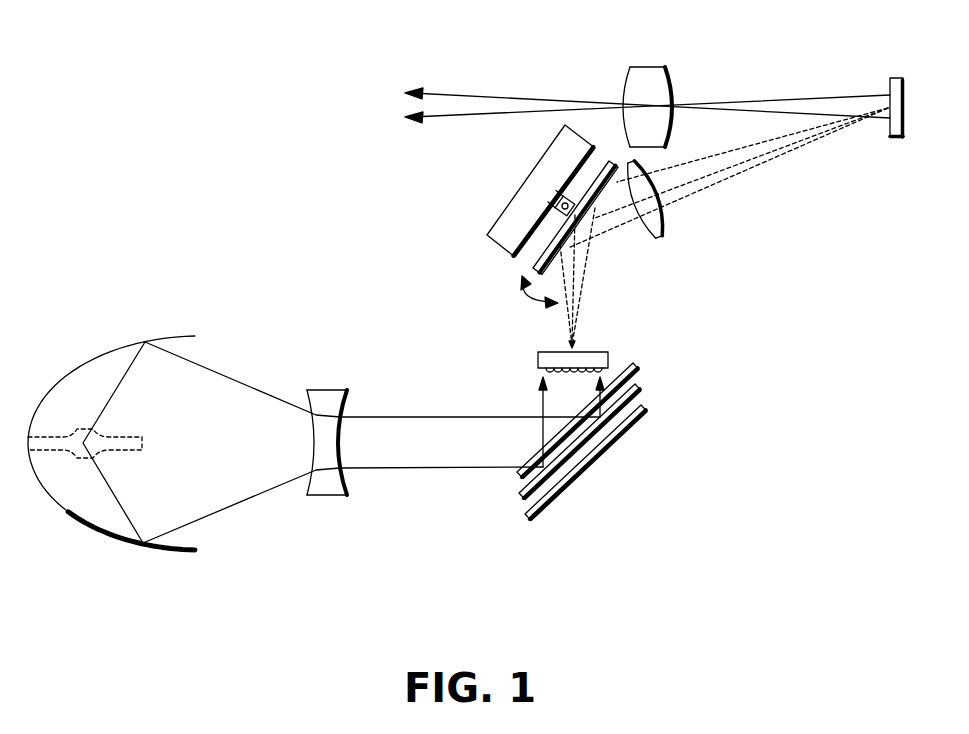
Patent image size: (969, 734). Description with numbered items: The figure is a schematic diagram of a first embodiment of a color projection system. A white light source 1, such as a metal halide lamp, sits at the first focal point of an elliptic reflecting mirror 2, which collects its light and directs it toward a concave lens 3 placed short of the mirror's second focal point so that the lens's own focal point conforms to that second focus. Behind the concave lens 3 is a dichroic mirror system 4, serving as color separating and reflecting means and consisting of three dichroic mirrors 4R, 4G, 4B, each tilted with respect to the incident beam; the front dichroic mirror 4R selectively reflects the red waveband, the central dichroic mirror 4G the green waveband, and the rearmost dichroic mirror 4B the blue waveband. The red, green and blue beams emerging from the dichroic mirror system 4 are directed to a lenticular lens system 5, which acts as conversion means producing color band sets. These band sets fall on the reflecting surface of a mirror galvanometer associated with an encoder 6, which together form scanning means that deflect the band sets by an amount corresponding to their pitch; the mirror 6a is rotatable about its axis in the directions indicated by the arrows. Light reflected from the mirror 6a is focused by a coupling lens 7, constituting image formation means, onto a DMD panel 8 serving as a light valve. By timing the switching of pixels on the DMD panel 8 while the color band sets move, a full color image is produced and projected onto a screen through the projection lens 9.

The white light source 1 is at (75, 521).
The elliptic reflecting mirror 2 is at (118, 349).
The concave lens 3 is at (325, 389).
The dichroic mirror system 4 is at (580, 421).
The dichroic mirror 4R is at (629, 361).
The dichroic mirror 4G is at (520, 494).
The dichroic mirror 4B is at (566, 497).
The lenticular lens system 5 is at (538, 360).
The mirror galvanometer associated with an encoder 6 is at (490, 200).
The mirror 6a is at (532, 263).
The coupling lens 7 is at (662, 228).
The DMD panel 8 is at (893, 78).
The projection lens 9 is at (647, 67).